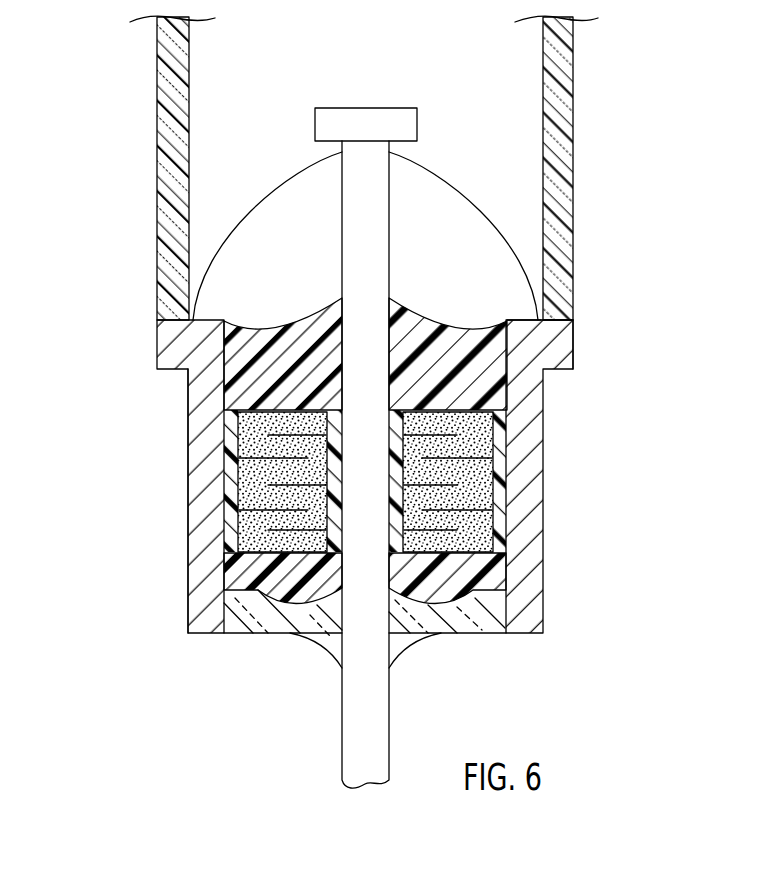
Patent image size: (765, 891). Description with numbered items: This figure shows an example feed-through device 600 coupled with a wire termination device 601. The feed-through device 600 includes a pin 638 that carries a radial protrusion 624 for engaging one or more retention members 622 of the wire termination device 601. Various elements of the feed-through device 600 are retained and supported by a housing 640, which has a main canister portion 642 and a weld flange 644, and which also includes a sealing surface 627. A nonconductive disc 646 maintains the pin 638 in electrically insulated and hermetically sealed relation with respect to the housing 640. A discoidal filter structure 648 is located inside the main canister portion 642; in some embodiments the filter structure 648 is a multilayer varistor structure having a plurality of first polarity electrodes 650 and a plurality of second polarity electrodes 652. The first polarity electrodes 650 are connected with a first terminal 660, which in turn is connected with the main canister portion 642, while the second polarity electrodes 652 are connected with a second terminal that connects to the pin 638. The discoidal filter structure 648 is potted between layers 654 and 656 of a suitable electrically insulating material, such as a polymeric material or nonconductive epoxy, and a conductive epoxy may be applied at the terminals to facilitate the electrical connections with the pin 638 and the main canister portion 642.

The feed-through device 600 is at (116, 490).
The wire termination device 601 is at (155, 160).
The retention members 622 is at (275, 190).
The radial protrusion 624 is at (417, 118).
The sealing surface 627 is at (525, 316).
The pin 638 is at (380, 236).
The housing 640 is at (569, 556).
The main canister portion 642 is at (188, 583).
The weld flange 644 is at (573, 348).
The nonconductive disc 646 is at (443, 637).
The discoidal filter structure 648 is at (445, 405).
The first polarity electrodes 650 is at (268, 505).
The second polarity electrodes 652 is at (457, 483).
The layer of electrically insulating material 654 is at (300, 321).
The layer of electrically insulating material 656 is at (305, 600).
The first terminal 660 is at (498, 493).